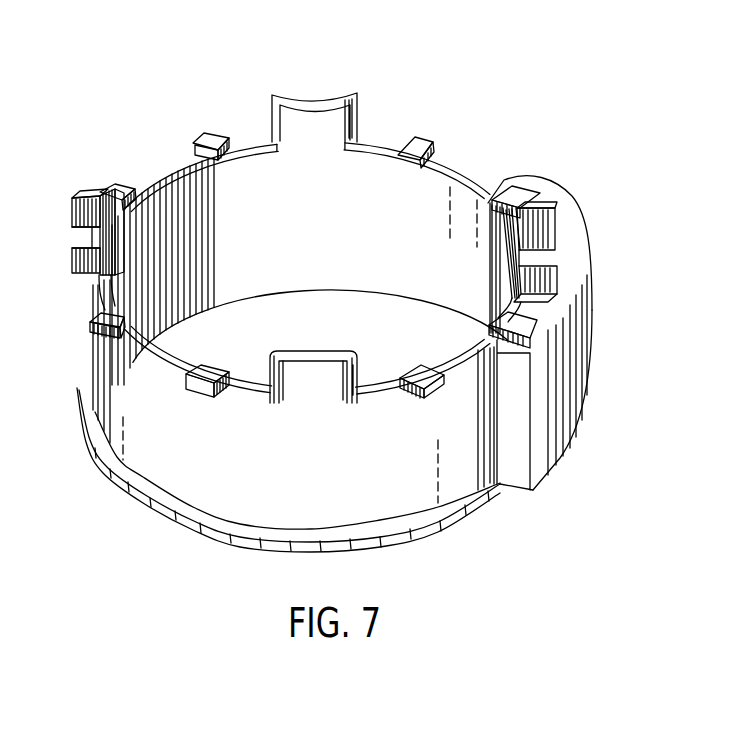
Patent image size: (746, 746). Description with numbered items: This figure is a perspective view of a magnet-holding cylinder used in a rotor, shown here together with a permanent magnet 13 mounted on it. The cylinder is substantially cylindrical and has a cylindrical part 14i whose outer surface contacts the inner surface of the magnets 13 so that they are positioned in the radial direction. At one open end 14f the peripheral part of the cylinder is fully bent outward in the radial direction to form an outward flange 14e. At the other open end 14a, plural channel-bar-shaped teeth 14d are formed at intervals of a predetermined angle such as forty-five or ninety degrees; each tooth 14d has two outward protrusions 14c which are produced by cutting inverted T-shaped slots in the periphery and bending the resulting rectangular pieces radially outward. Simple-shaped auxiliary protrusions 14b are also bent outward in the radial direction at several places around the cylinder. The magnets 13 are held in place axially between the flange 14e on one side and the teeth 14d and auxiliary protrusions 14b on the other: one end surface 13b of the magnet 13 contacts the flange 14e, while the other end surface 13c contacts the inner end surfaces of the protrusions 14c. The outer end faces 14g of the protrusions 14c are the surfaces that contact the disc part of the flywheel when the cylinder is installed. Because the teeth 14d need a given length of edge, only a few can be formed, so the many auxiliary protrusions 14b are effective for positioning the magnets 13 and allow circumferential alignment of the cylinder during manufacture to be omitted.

The permanent magnet 13 is at (570, 370).
The end surface 13b is at (557, 452).
The end surface 13c is at (565, 247).
The open end 14a is at (245, 100).
The auxiliary protrusion 14b is at (214, 135).
The outward protrusion 14c is at (76, 206).
The channel-bar-shaped tooth 14d is at (318, 92).
The outward flange 14e is at (455, 510).
The open end 14f is at (245, 298).
The outer end face 14g is at (532, 212).
The cylindrical part 14i is at (145, 462).